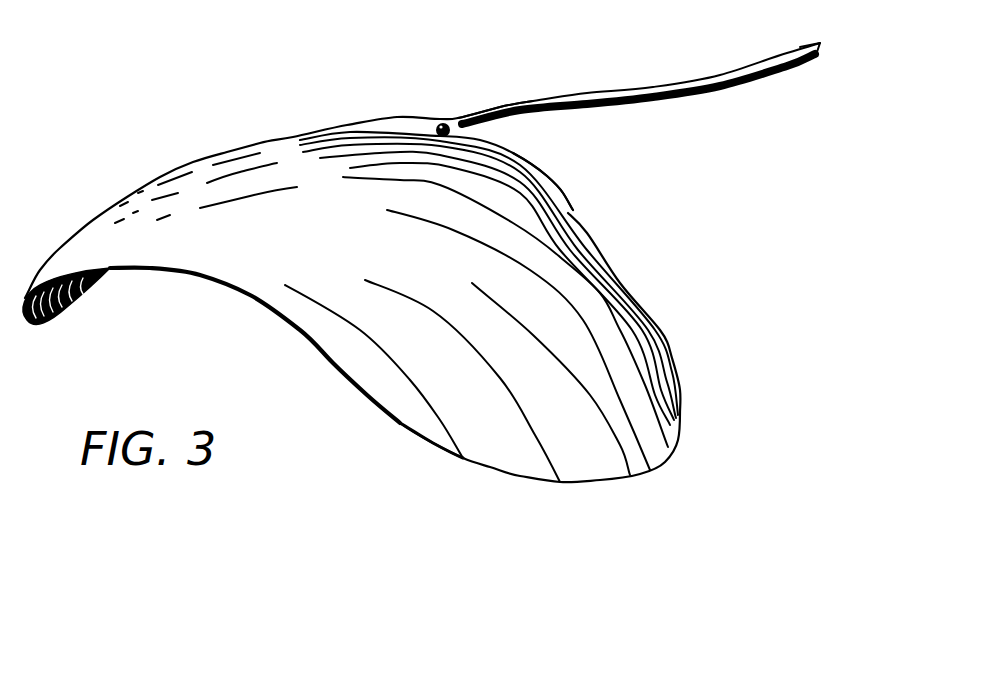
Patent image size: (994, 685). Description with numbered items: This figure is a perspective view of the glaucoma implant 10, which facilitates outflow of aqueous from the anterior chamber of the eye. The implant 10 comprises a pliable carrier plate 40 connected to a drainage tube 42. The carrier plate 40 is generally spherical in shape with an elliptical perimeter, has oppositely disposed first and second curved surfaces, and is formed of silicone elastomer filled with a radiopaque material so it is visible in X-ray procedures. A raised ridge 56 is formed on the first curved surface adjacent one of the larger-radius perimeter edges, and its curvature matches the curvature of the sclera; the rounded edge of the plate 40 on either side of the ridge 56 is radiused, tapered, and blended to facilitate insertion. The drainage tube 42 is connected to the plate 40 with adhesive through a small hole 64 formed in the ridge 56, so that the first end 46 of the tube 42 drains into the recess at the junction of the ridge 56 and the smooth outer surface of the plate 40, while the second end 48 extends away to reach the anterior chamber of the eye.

The implant 10 is at (187, 73).
The carrier plate 40 is at (618, 298).
The drainage tube 42 is at (725, 78).
The first end 46 is at (473, 115).
The second end 48 is at (820, 50).
The raised ridge 56 is at (537, 153).
The small hole 64 is at (440, 128).